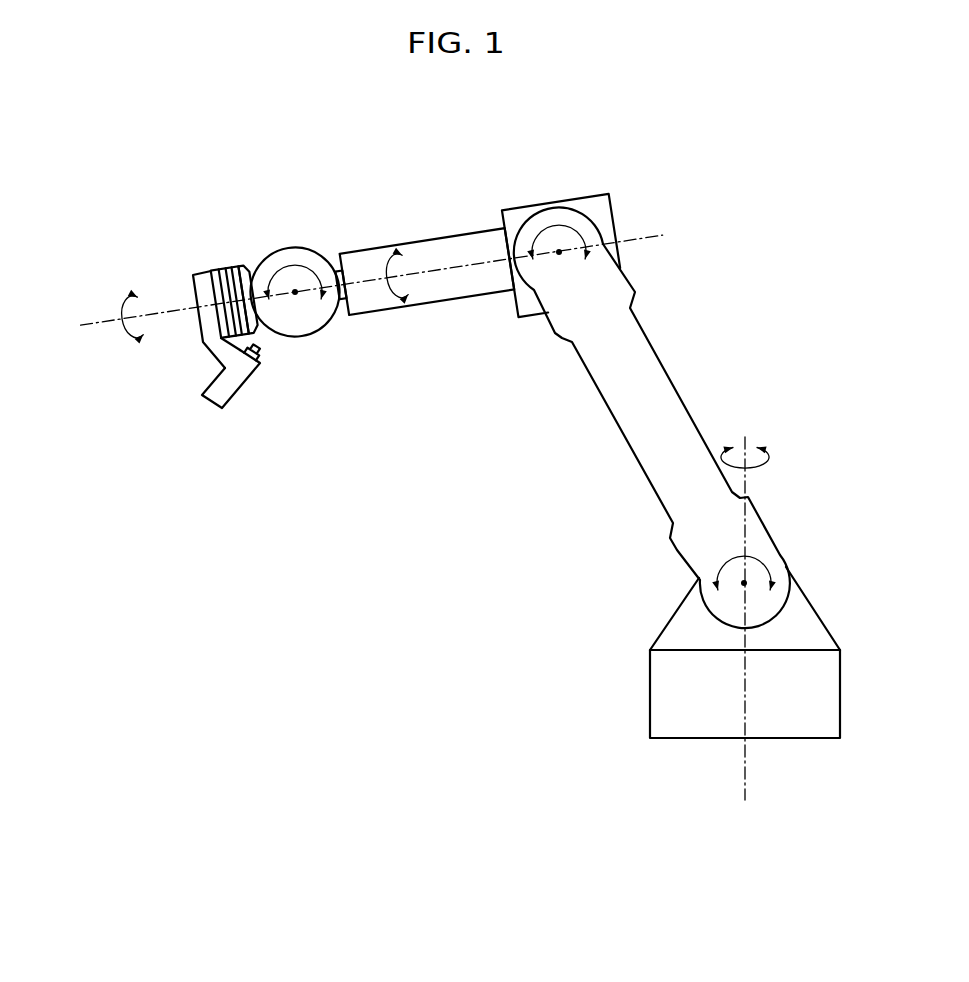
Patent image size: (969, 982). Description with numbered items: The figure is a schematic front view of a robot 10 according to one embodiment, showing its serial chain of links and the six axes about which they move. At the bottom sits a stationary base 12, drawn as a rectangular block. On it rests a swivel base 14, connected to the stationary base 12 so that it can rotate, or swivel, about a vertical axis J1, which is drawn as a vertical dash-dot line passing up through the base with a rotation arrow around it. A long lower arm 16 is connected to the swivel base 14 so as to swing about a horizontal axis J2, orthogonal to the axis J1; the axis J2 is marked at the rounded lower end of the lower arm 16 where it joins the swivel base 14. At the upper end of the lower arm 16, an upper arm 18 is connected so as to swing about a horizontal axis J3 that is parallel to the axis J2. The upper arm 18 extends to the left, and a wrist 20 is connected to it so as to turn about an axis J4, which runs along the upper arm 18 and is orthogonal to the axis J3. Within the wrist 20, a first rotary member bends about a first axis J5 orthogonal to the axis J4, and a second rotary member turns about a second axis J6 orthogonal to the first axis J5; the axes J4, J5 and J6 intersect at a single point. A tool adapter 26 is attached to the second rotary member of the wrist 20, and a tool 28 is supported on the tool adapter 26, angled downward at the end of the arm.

The robot 10 is at (450, 606).
The stationary base 12 is at (672, 710).
The swivel base 14 is at (692, 620).
The lower arm 16 is at (650, 397).
The upper arm 18 is at (438, 250).
The wrist 20 is at (257, 234).
The tool adapter 26 is at (203, 287).
The tool 28 is at (238, 396).
The vertical axis line J1 is at (750, 768).
The horizontal axis line J2 is at (744, 583).
The horizontal axis line J3 is at (559, 252).
The axis line J4 is at (652, 233).
The first axis line J5 is at (295, 292).
The second axis line J6 is at (100, 312).